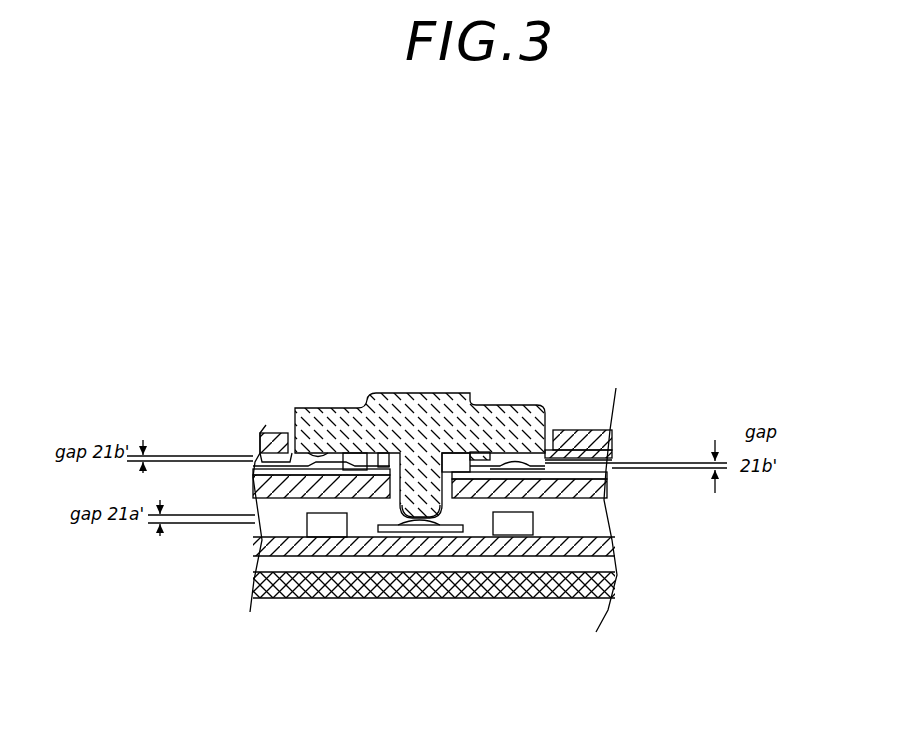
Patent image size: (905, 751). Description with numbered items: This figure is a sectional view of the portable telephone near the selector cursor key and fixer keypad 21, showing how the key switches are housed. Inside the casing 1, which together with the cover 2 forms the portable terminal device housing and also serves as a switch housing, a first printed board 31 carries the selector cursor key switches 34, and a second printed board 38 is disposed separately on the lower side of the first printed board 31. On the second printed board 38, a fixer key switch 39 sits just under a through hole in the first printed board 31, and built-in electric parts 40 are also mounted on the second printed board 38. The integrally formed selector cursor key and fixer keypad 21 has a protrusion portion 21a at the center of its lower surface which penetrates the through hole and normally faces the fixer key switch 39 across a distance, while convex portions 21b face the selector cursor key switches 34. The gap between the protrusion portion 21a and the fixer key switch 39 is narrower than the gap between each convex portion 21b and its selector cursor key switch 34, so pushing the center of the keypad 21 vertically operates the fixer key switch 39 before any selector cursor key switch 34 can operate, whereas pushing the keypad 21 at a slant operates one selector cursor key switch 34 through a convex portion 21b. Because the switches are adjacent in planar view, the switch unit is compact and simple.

The casing 1 is at (318, 600).
The cover 2 is at (585, 430).
The selector cursor key and fixer keypad 21 is at (335, 398).
The protrusion portion 21a is at (418, 503).
The convex portion 21b is at (347, 457).
The first printed board 31 is at (255, 478).
The selector cursor key switch 34 is at (510, 458).
The second printed board 38 is at (408, 558).
The fixer key switch 39 is at (438, 518).
The built-in electric parts 40 is at (515, 525).